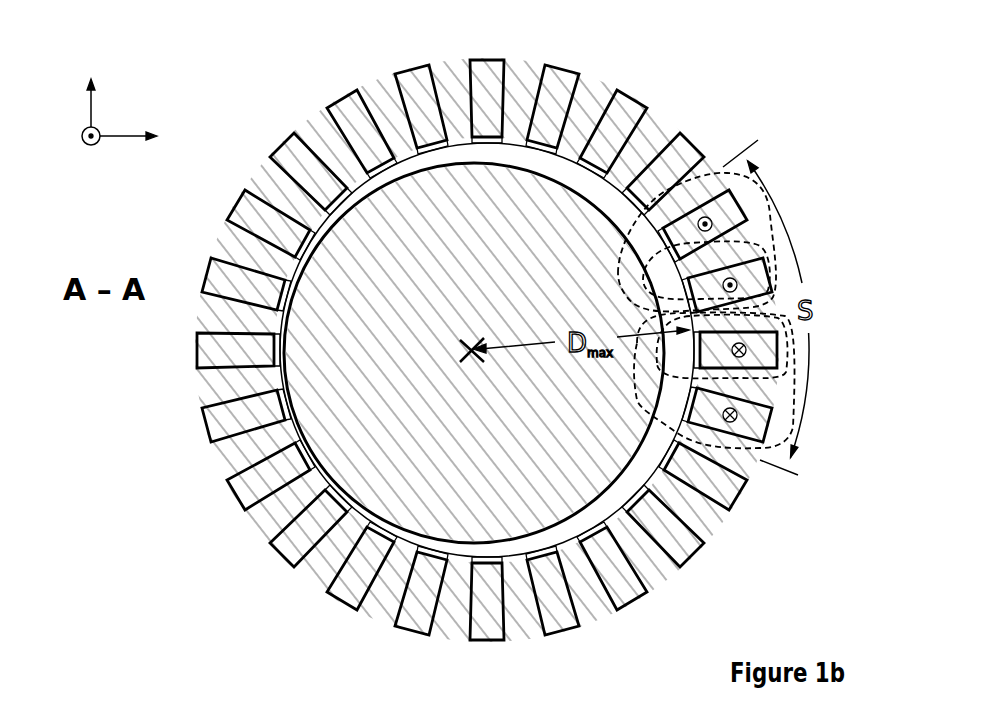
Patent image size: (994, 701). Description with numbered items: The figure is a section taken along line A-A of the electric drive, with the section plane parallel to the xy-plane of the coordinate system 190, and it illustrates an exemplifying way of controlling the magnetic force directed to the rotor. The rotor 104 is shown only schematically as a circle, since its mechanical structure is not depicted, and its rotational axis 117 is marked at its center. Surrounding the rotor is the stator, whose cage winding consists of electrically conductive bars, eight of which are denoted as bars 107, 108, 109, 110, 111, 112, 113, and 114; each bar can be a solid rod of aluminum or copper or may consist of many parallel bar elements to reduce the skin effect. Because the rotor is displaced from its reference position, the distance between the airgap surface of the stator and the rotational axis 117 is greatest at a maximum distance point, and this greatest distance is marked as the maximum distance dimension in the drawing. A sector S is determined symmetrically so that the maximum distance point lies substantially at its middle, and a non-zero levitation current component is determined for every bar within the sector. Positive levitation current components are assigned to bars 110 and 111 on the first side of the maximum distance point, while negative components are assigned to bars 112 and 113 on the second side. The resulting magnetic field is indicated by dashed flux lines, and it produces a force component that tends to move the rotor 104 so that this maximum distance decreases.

The rotor 104 is at (507, 236).
The bar of the cage winding 107 is at (496, 59).
The bar of the cage winding 108 is at (485, 642).
The bar of the cage winding 109 is at (693, 140).
The bar of the cage winding 110 is at (745, 205).
The bar of the cage winding 111 is at (768, 266).
The bar of the cage winding 112 is at (778, 357).
The bar of the cage winding 113 is at (772, 423).
The bar of the cage winding 114 is at (744, 497).
The rotational axis of the rotor 117 is at (472, 337).
The coordinate system 190 is at (139, 117).